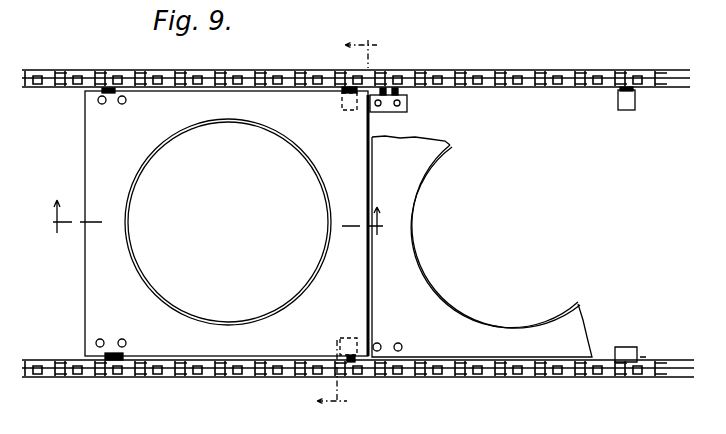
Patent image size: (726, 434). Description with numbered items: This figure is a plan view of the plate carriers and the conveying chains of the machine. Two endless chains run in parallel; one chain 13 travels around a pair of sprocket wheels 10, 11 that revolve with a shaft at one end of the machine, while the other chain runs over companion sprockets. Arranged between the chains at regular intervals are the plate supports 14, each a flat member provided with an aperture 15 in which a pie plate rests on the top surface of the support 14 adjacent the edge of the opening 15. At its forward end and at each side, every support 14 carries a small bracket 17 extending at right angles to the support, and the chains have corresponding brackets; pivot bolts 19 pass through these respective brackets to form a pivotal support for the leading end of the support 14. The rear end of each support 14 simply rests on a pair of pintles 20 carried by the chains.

The sprocket wheel 10 is at (226, 216).
The sprocket wheel 11 is at (343, 223).
The endless chain 13 is at (76, 64).
The plate support 14 is at (338, 224).
The aperture 15 is at (148, 163).
The bracket 17 is at (414, 110).
The pivot bolt 19 is at (130, 350).
The pintle 20 is at (351, 332).